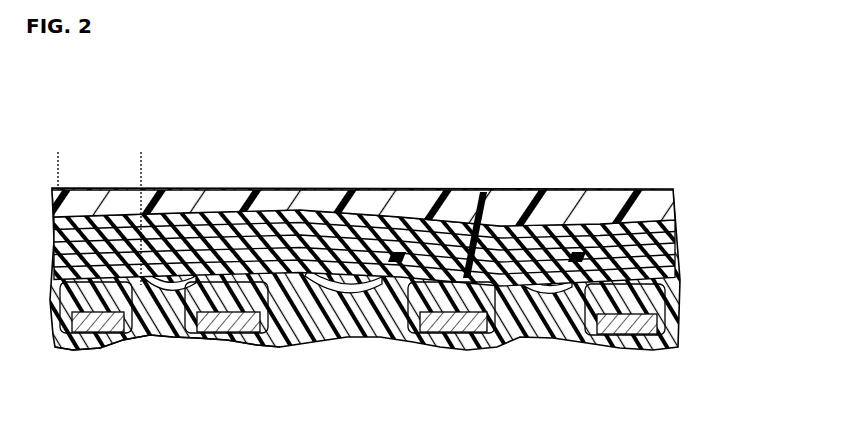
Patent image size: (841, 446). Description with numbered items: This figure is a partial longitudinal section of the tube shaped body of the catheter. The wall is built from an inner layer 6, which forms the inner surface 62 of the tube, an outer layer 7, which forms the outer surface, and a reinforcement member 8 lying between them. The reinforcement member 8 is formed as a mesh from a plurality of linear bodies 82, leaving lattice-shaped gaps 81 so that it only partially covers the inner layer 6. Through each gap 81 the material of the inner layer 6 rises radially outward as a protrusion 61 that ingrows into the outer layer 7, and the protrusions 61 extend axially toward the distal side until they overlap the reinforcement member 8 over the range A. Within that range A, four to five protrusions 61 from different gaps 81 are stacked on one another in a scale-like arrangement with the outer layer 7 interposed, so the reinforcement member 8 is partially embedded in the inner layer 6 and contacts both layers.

The inner layer 6 is at (203, 338).
The protrusions 61 is at (254, 268).
The inner surface 62 is at (365, 340).
The outer layer 7 is at (180, 190).
The reinforcement member 8 is at (466, 275).
The gaps 81 is at (397, 257).
The linear bodies 82 is at (455, 333).
The range A is at (58, 163).